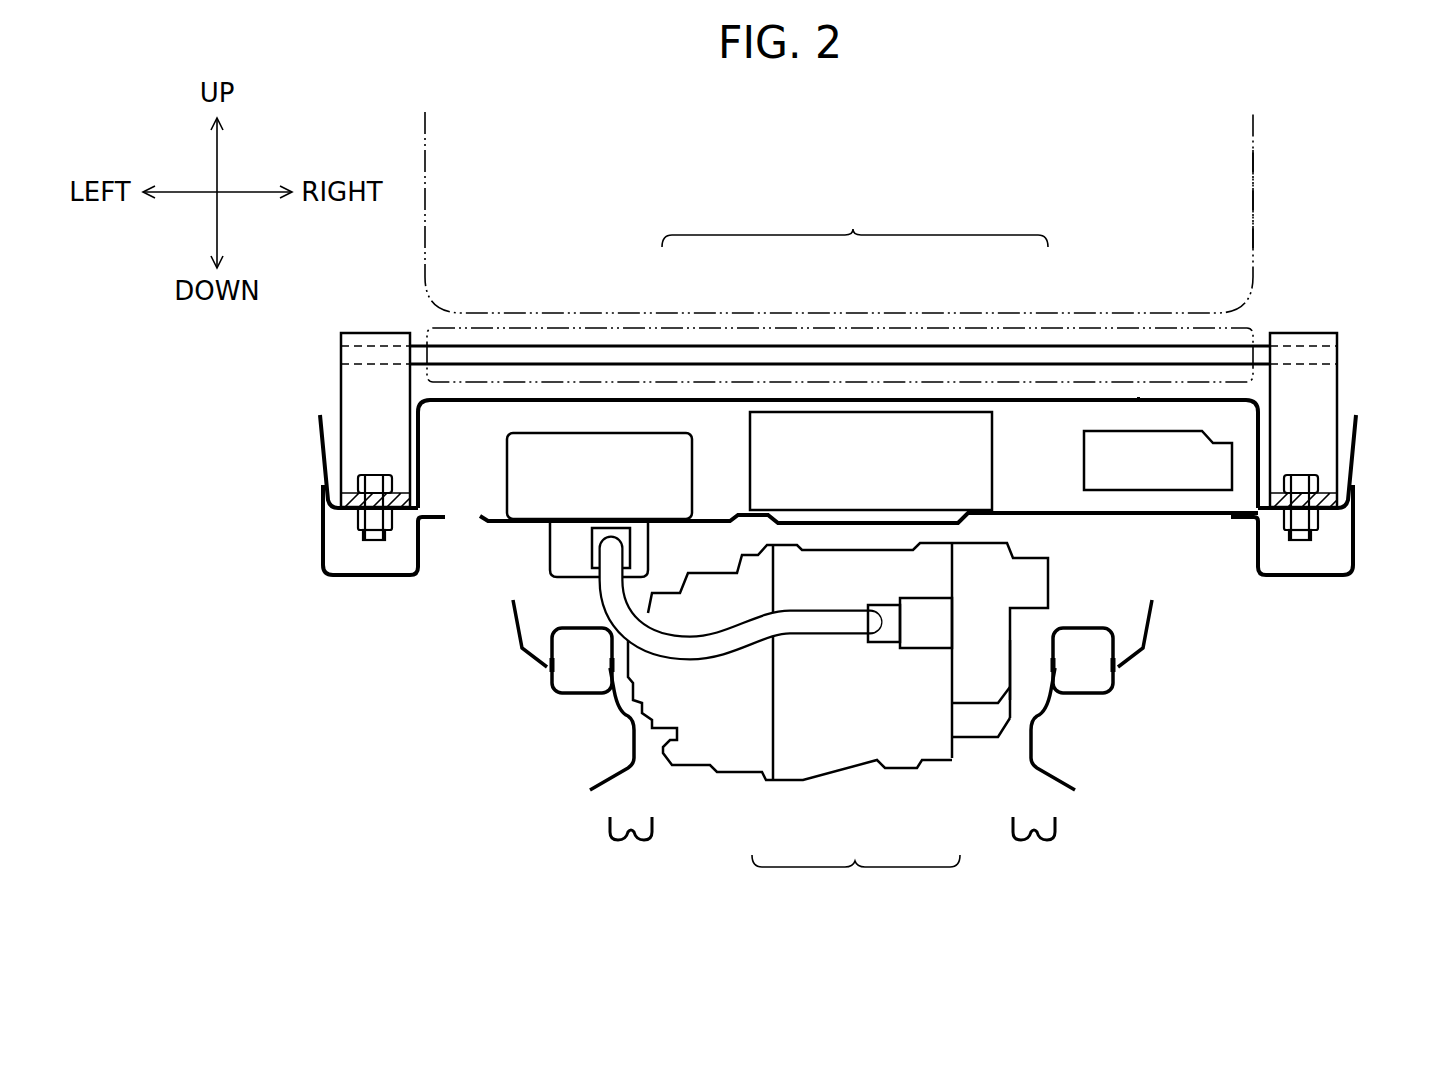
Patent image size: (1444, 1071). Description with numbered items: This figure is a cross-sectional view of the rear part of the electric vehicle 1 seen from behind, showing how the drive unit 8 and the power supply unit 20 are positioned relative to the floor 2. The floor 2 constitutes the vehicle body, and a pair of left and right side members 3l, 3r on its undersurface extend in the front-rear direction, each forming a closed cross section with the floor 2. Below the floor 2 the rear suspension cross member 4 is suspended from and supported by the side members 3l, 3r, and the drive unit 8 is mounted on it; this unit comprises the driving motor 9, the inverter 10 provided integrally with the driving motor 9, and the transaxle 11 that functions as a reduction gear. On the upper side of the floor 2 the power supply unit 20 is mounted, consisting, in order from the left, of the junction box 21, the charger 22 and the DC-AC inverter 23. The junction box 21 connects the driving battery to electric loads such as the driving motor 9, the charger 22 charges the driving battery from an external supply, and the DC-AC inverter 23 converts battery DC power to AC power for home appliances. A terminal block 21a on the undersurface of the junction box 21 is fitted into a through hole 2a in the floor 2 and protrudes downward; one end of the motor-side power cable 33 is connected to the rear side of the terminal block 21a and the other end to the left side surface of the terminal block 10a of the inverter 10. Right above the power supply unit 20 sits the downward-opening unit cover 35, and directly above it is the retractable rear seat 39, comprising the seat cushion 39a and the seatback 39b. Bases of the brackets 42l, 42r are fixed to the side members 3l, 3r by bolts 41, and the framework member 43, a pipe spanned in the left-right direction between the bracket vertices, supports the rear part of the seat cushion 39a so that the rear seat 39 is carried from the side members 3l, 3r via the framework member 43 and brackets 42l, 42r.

The electric vehicle 1 is at (377, 157).
The floor 2 is at (1160, 513).
The through hole 2a is at (547, 520).
The left side member 3l is at (322, 540).
The right side member 3r is at (1356, 542).
The rear suspension cross member 4 is at (633, 740).
The drive unit 8 is at (876, 724).
The driving motor 9 is at (858, 750).
The inverter 10 is at (978, 722).
The terminal block of the inverter 10a is at (998, 658).
The transaxle 11 is at (743, 757).
The power supply unit 20 is at (869, 358).
The junction box 21 is at (651, 438).
The terminal block 21a is at (563, 548).
The charger 22 is at (852, 438).
The DC-AC inverter 23 is at (1115, 440).
The motor-side power cable 33 is at (817, 638).
The unit cover 35 is at (1137, 398).
The rear seat 39 is at (1260, 137).
The seat cushion 39a is at (1252, 330).
The seatback 39b is at (1255, 200).
The bolts 41 is at (373, 473).
The left bracket 42l is at (352, 392).
The right bracket 42r is at (1325, 392).
The framework member 43 is at (572, 357).